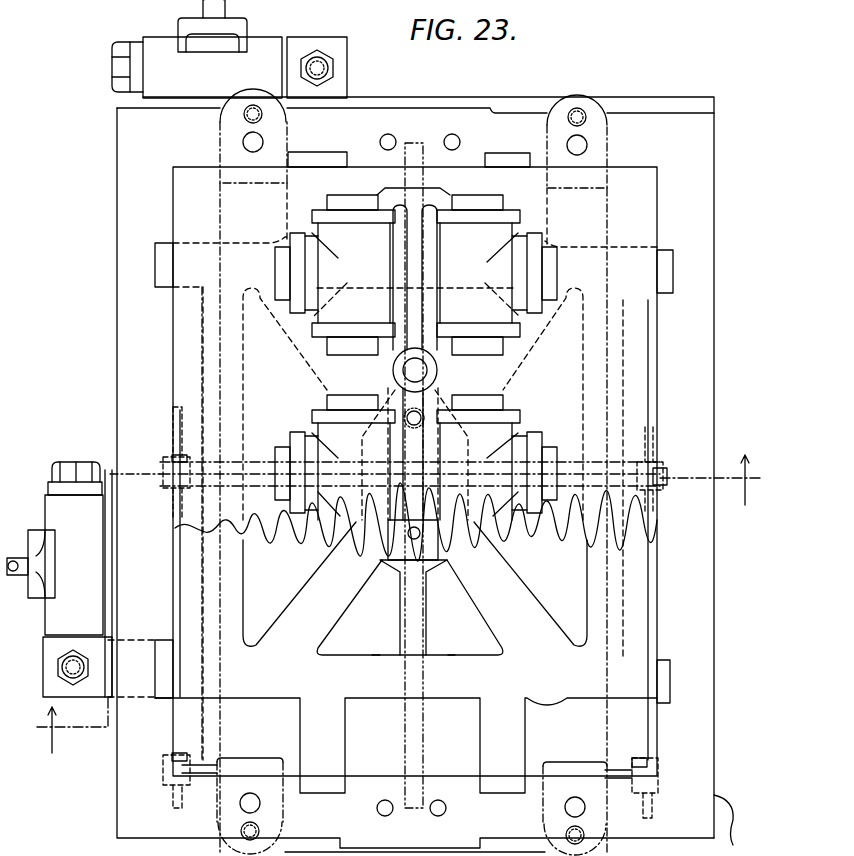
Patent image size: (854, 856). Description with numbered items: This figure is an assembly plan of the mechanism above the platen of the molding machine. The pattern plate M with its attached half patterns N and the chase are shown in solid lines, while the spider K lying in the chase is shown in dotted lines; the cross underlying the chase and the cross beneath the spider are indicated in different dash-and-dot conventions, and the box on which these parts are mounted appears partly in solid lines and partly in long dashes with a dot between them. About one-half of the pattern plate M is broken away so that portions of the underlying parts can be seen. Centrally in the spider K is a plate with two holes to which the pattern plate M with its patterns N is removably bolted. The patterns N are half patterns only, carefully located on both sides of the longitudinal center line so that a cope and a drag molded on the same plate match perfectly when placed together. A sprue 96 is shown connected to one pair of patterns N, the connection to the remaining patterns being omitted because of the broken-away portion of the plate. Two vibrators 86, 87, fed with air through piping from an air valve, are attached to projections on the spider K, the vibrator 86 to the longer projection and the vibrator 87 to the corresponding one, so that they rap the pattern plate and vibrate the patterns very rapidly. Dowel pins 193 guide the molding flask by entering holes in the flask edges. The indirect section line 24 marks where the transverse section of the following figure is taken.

The pattern plate M is at (662, 366).
The spider K is at (414, 480).
The central stem L is at (398, 632).
The patterns N is at (510, 400).
The sprue 96 is at (391, 367).
The dowel pins 193 is at (440, 138).
The vibrator 87 is at (229, 49).
The vibrator 86 is at (59, 579).
The section line 24— 24 is at (398, 604).